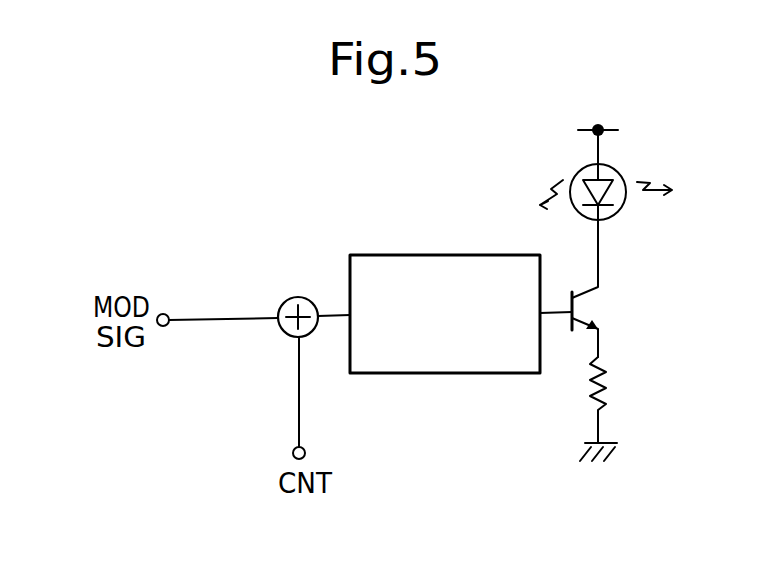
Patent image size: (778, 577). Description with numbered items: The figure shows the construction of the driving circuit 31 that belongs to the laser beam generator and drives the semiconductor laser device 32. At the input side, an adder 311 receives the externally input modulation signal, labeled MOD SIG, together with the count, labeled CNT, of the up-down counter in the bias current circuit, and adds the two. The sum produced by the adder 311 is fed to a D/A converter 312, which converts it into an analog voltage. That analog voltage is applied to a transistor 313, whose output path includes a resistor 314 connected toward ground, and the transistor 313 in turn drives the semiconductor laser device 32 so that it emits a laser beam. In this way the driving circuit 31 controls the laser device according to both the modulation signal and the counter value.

The driving circuit 31 is at (412, 393).
The adder 311 is at (293, 295).
The D/A converter 312 is at (432, 275).
The transistor 313 is at (603, 310).
The resistor 314 is at (607, 395).
The semiconductor laser device 32 is at (620, 172).